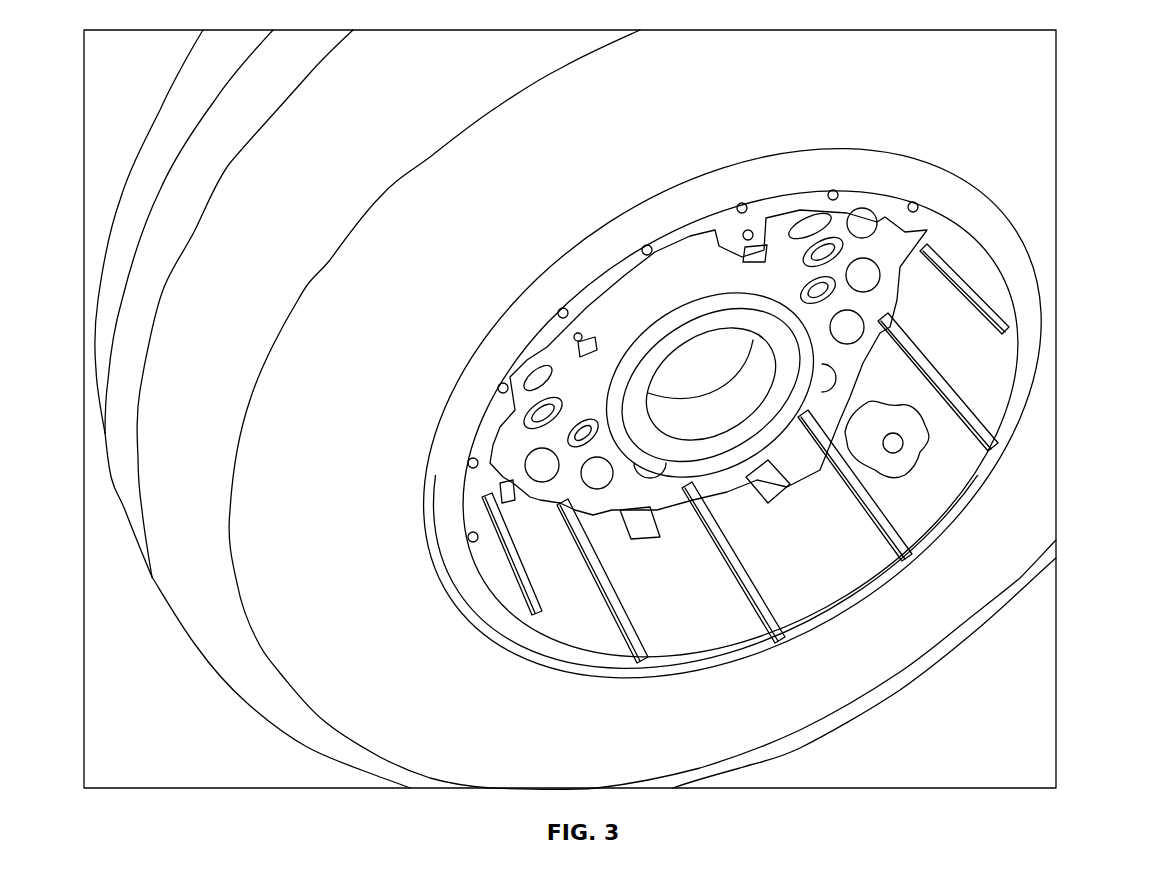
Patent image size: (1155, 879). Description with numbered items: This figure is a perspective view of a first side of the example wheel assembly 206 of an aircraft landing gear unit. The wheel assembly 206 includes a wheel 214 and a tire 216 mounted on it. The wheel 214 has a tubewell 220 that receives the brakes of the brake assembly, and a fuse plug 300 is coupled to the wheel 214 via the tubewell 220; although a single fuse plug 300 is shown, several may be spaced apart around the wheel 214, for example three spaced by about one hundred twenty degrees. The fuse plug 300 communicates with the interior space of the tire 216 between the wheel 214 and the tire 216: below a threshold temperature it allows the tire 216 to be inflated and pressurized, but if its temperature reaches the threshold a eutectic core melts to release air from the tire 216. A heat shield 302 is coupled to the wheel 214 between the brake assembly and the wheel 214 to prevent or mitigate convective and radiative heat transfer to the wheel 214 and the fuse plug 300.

The wheel assembly 206 is at (1075, 96).
The wheel 214 is at (653, 217).
The tire 216 is at (218, 133).
The tubewell 220 is at (875, 457).
The fuse plug 300 is at (893, 463).
The heat shield 302 is at (785, 532).